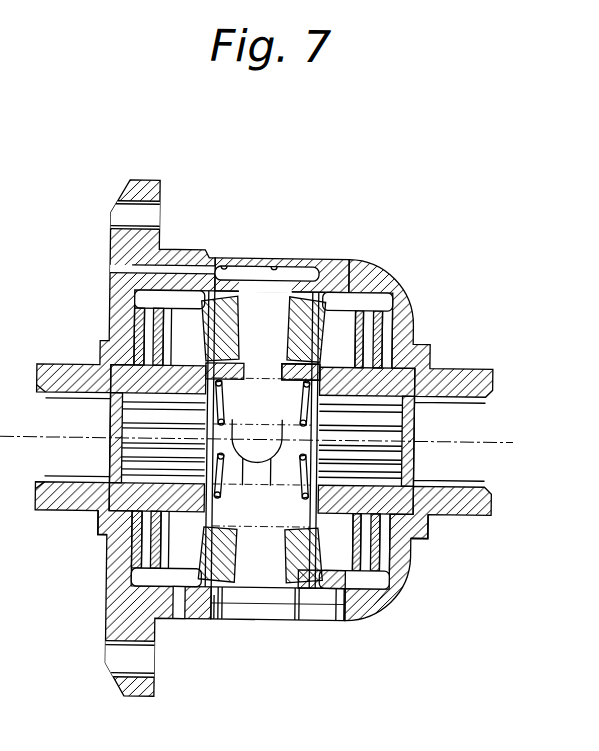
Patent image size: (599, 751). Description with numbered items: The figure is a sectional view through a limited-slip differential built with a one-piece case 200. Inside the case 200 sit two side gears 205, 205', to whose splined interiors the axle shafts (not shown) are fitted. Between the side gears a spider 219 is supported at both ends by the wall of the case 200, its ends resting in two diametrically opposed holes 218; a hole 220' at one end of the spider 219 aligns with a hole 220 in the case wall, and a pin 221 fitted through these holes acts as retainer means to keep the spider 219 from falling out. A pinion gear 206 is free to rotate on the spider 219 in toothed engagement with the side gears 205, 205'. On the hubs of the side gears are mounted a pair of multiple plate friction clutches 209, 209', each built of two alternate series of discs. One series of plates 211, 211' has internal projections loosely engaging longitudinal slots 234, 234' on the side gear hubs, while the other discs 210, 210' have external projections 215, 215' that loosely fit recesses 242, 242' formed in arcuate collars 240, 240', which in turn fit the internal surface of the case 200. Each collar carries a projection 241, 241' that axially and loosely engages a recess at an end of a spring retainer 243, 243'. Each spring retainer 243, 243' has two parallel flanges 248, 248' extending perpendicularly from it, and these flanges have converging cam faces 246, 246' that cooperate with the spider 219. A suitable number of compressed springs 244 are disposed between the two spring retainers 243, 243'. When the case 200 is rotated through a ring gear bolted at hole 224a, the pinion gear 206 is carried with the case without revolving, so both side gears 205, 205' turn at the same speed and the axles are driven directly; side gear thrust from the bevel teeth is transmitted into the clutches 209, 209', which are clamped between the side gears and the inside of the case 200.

The case 200 is at (300, 258).
The side gear 205 is at (260, 555).
The side gear 205' is at (382, 595).
The pinion gear 206 is at (227, 298).
The multiple plate friction clutch 209 is at (124, 321).
The multiple plate friction clutch 209' is at (421, 318).
The clutch disc 210 is at (101, 539).
The clutch disc 210' is at (448, 326).
The clutch plate 211 is at (123, 553).
The clutch plate 211' is at (398, 287).
The external projection 215 is at (124, 438).
The external projection 215' is at (417, 571).
The hole 218 is at (350, 296).
The spider 219 is at (280, 461).
The hole 220 is at (261, 246).
The hole 220' is at (256, 239).
The pin 221 is at (249, 267).
The hole 224a is at (158, 205).
The longitudinal slot 234 is at (73, 405).
The longitudinal slot 234' is at (440, 402).
The arcuate collar 240 is at (215, 630).
The arcuate collar 240' is at (358, 625).
The projection 241 is at (235, 644).
The projection 241' is at (310, 635).
The recess 242 is at (178, 634).
The recess 242' is at (405, 622).
The spring retainer 243 is at (277, 630).
The spring retainer 243' is at (262, 439).
The compressed spring 244 is at (370, 298).
The cam face 246 is at (173, 462).
The cam face 246' is at (364, 452).
The flange 248 is at (126, 438).
The flange 248' is at (397, 441).